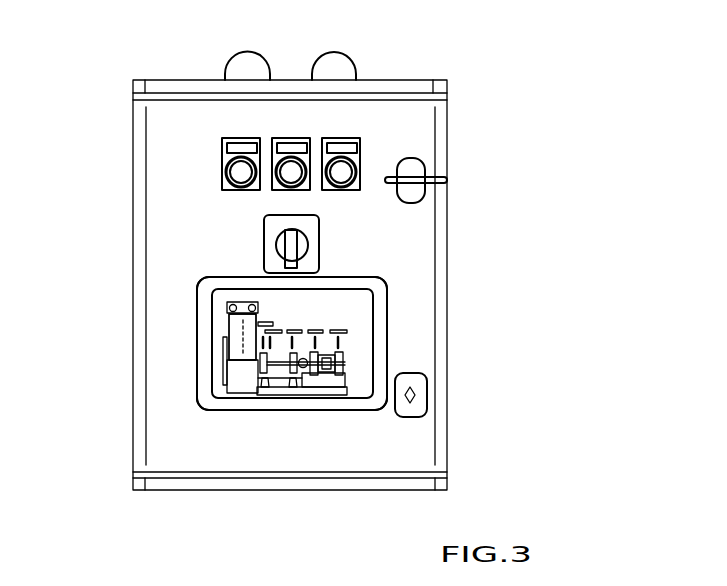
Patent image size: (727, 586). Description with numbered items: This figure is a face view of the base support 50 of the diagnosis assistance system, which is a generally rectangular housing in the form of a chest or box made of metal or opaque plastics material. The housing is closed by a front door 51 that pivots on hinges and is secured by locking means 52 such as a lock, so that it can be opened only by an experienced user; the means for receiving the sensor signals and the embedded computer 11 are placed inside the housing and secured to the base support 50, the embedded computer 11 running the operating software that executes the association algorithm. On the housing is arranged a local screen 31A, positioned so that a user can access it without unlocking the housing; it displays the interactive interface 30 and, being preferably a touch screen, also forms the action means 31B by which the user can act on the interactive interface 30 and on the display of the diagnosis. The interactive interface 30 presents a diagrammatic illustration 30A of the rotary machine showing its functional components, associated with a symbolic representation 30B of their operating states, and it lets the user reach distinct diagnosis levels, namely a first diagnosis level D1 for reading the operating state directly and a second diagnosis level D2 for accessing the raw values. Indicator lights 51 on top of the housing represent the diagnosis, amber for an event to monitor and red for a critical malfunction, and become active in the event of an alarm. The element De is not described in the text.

The base support 50 is at (437, 250).
The indicator lights 51 is at (267, 62).
The locking means 52 is at (412, 170).
The embedded computer 11 is at (218, 390).
The local screen 31A is at (377, 317).
The action means 31B is at (360, 367).
The first diagnosis level D1 is at (240, 297).
The second diagnosis level D2 is at (275, 297).
The diagrammatic illustration 30A is at (250, 335).
The symbolic representation 30B is at (243, 373).
The interactive interface 30 is at (289, 431).
The electric motor De is at (257, 380).